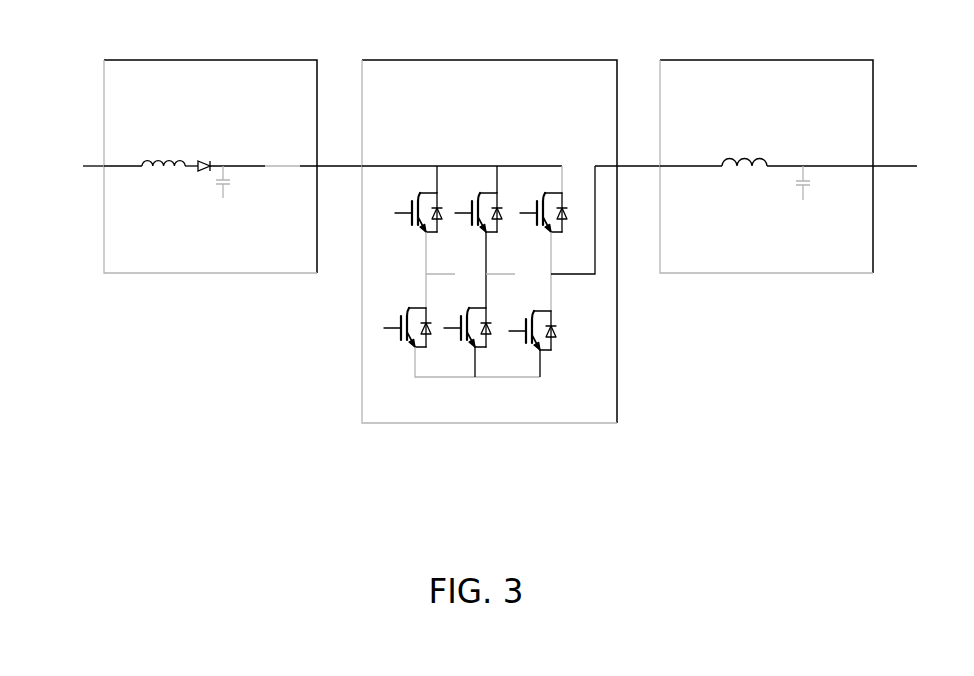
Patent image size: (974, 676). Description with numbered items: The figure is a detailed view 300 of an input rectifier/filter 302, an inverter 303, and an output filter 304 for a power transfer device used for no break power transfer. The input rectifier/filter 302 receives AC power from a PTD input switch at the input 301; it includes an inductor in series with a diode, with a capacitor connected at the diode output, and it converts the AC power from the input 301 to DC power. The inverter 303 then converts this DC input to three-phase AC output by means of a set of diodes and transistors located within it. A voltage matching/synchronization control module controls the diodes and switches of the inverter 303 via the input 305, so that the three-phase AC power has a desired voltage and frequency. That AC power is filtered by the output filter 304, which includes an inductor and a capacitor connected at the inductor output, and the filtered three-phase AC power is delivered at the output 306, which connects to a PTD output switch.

The detailed view 300 is at (115, 35).
The input 301 is at (47, 174).
The input rectifier/filter 302 is at (189, 107).
The inverter 303 is at (483, 108).
The output filter 304 is at (761, 107).
The input 305 is at (488, 430).
The output 306 is at (922, 175).